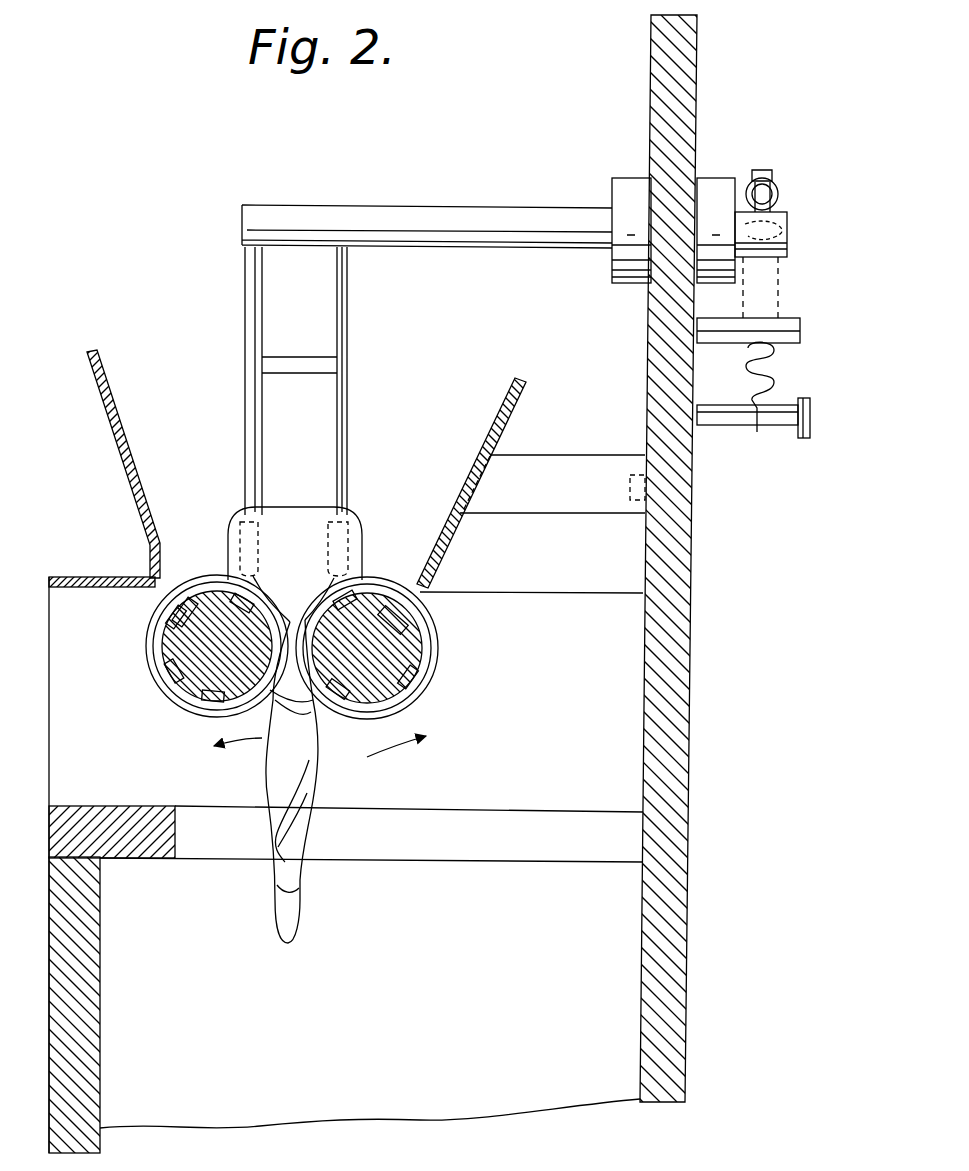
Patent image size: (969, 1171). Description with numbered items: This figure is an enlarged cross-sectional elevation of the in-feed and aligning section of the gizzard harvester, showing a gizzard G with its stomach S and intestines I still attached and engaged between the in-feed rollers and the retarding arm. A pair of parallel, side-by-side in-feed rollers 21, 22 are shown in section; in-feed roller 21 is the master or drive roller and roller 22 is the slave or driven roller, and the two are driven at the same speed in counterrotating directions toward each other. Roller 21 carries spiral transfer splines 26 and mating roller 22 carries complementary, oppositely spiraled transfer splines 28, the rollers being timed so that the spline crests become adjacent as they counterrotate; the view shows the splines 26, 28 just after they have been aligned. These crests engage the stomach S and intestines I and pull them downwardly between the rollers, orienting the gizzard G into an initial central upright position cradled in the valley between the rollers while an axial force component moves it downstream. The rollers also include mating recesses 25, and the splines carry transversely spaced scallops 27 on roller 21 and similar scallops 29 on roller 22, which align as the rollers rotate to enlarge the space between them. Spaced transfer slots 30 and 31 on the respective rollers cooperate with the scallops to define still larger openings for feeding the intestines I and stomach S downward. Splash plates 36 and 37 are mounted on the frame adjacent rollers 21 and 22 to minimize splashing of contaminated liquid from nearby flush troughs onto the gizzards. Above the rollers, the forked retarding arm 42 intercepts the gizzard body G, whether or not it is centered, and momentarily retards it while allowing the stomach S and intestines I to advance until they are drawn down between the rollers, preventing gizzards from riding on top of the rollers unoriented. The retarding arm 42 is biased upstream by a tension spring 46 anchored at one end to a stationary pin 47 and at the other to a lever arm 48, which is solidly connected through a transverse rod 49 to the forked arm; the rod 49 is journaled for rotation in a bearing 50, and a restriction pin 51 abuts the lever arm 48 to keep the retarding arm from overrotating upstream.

The in-feed roller 21 is at (413, 703).
The in-feed roller 22 is at (200, 649).
The mating recesses 25 is at (218, 703).
The spiral transfer splines 26 is at (370, 577).
The scallops 27 is at (370, 707).
The transfer splines 28 is at (223, 573).
The scallops 29 is at (215, 750).
The transfer slots 30 is at (408, 619).
The transfer slots 31 is at (180, 606).
The splash plate 36 is at (103, 380).
The splash plate 37 is at (522, 399).
The retarding arm 42 is at (245, 424).
The tension spring 46 is at (769, 369).
The stationary pin 47 is at (812, 412).
The lever arm 48 is at (773, 186).
The transverse rod 49 is at (500, 212).
The bearing 50 is at (713, 178).
The restriction pin 51 is at (790, 327).
The gizzard G is at (294, 515).
The stomach S is at (278, 774).
The intestines I is at (298, 909).